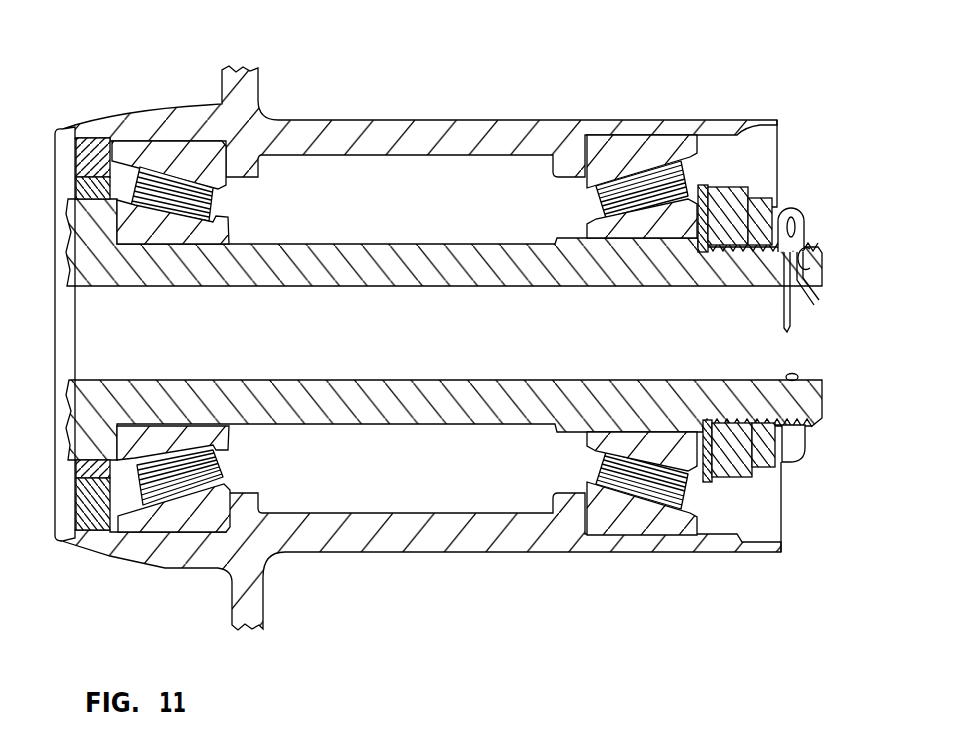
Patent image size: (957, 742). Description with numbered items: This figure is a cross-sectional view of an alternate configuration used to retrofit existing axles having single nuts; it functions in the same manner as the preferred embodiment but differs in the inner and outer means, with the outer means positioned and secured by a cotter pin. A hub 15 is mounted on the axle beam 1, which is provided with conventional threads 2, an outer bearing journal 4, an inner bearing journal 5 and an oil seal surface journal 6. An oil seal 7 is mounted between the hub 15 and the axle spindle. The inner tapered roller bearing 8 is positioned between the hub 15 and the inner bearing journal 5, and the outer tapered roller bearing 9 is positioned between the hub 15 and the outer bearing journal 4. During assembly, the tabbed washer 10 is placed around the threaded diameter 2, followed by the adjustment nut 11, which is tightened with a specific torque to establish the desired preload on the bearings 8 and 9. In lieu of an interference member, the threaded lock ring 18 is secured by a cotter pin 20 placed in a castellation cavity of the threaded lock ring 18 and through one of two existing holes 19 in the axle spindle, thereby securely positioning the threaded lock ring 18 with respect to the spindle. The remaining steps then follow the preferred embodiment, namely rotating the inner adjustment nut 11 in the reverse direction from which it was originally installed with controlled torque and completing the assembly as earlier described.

The axle beam 1 is at (442, 357).
The threads 2 is at (772, 422).
The outer bearing journal 4 is at (642, 238).
The inner bearing journal 5 is at (167, 237).
The oil seal surface journal 6 is at (100, 227).
The oil seal 7 is at (58, 178).
The inner tapered roller bearing 8 is at (216, 199).
The outer tapered roller bearing 9 is at (598, 206).
The washer 10 is at (700, 184).
The adjustment nut 11 is at (720, 480).
The hub 15 is at (544, 120).
The threaded lock ring 18 is at (793, 458).
The holes 19 is at (822, 250).
The cotter pin 20 is at (782, 213).